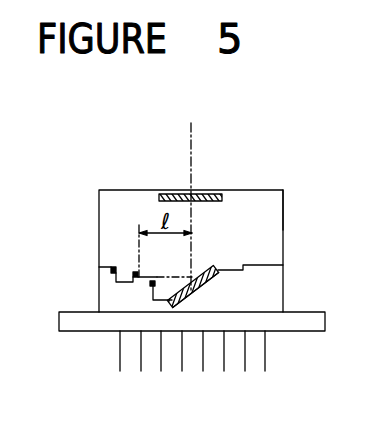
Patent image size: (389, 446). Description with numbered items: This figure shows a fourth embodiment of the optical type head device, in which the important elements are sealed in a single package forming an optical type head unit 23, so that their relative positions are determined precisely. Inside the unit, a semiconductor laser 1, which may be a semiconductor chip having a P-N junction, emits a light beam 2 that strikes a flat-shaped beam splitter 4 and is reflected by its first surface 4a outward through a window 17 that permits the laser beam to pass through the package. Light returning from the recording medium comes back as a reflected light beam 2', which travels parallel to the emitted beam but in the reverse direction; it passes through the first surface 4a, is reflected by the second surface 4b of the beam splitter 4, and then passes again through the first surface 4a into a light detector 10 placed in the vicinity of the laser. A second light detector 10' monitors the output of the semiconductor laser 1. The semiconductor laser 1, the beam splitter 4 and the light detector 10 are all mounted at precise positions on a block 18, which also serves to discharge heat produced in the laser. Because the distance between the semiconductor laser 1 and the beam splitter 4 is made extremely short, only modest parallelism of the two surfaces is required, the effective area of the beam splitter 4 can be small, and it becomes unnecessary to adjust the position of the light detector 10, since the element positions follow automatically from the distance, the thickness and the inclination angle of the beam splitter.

The semiconductor laser 1 is at (134, 272).
The light beam 2 is at (132, 250).
The reflected light beam 2' is at (171, 270).
The beam splitter 4 is at (218, 268).
The first surface of the beam splitter 4a is at (247, 241).
The second surface of the beam splitter 4b is at (211, 284).
The light detector 10 is at (192, 328).
The second light detector 10' is at (72, 282).
The window 17 is at (213, 193).
The block 18 is at (272, 285).
The optical type head unit 23 is at (300, 202).